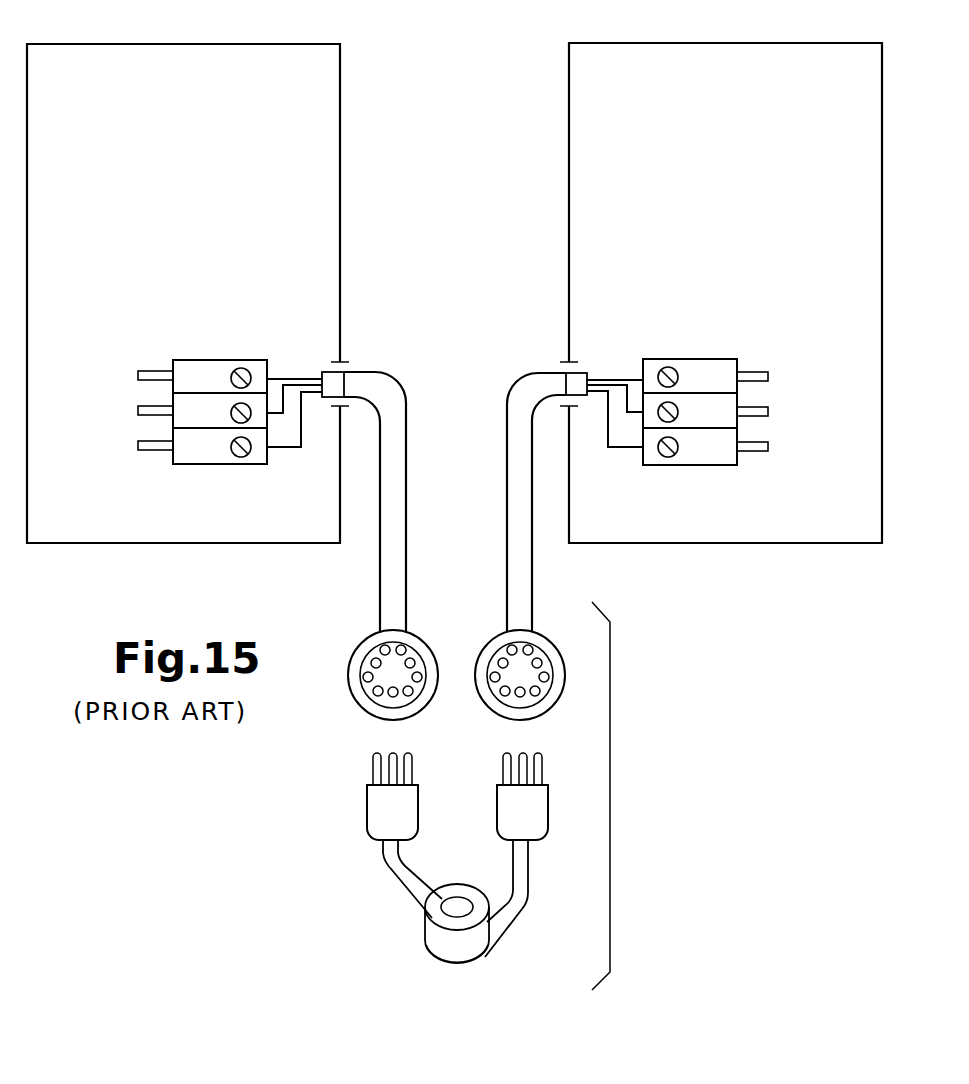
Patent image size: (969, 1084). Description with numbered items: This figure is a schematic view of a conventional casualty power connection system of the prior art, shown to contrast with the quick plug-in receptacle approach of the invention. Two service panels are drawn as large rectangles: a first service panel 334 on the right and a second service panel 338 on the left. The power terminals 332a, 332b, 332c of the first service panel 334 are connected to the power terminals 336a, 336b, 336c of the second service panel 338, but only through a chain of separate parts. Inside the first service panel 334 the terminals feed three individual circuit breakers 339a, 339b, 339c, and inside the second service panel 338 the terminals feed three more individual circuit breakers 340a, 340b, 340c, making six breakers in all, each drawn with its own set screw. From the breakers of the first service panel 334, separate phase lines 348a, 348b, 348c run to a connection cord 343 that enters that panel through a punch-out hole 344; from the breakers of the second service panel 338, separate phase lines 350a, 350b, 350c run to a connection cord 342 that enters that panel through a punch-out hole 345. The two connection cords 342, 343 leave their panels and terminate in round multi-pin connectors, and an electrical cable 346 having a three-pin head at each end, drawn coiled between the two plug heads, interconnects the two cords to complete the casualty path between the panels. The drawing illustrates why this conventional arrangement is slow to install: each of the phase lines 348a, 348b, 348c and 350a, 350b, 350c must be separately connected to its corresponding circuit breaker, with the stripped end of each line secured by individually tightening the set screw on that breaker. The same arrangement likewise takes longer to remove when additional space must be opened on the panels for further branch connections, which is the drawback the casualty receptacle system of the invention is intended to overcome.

The second service panel 338 is at (142, 44).
The first service panel 334 is at (680, 43).
The circuit breaker 340a is at (220, 359).
The circuit breaker 340b is at (192, 391).
The circuit breaker 340c is at (207, 466).
The power terminal 336a is at (157, 371).
The power terminal 336b is at (157, 406).
The power terminal 336c is at (157, 441).
The phase line 350a is at (288, 375).
The phase line 350b is at (275, 414).
The phase line 350c is at (303, 432).
The punch-out hole 345 is at (350, 371).
The connection cord 342 is at (407, 489).
The connection cord 343 is at (507, 573).
The punch-out hole 344 is at (572, 393).
The phase line 348a is at (618, 375).
The phase line 348b is at (633, 413).
The phase line 348c is at (607, 430).
The circuit breaker 339a is at (688, 358).
The circuit breaker 339b is at (717, 391).
The circuit breaker 339c is at (703, 466).
The power terminal 332a is at (757, 372).
The power terminal 332b is at (757, 407).
The power terminal 332c is at (757, 442).
The electrical cable 346 is at (525, 902).